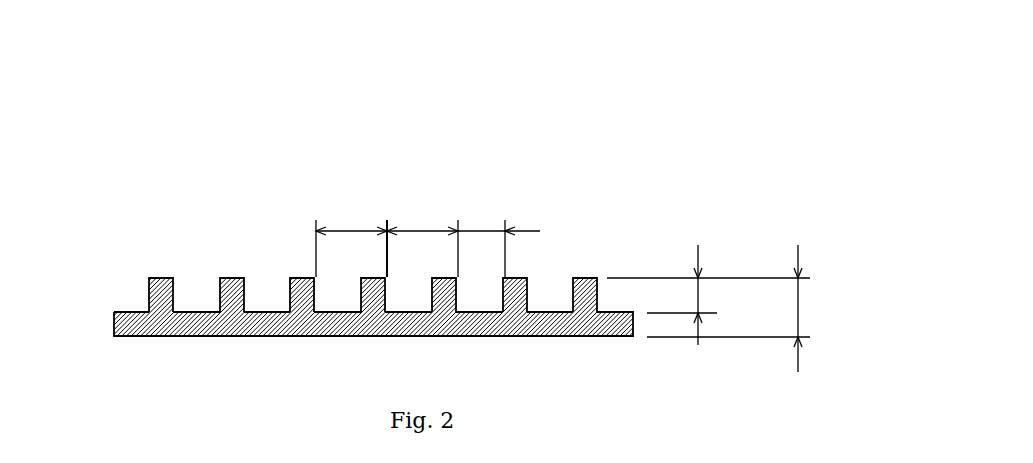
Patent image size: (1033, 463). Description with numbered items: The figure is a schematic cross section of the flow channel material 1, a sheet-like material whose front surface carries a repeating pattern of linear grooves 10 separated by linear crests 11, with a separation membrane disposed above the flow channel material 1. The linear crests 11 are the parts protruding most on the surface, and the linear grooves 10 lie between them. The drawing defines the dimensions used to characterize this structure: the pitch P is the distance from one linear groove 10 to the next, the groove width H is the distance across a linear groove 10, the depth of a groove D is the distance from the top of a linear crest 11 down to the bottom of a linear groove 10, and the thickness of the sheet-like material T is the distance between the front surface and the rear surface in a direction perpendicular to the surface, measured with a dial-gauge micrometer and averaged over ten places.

The flow channel material 1 is at (376, 193).
The linear groove 10 is at (266, 297).
The linear crest 11 is at (153, 273).
The pitch of linear groove P is at (350, 224).
The groove width H is at (482, 228).
The depth of groove D is at (705, 292).
The thickness of sheet-like material T is at (807, 318).